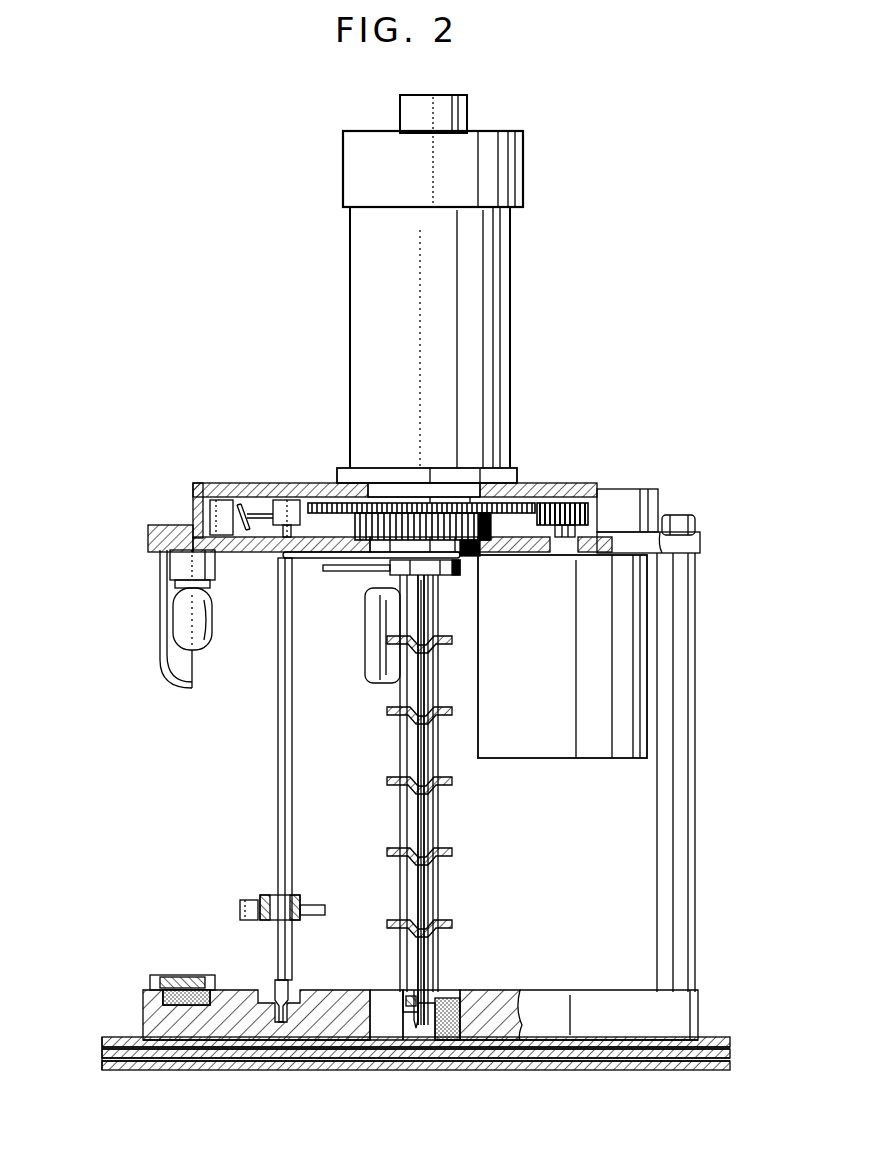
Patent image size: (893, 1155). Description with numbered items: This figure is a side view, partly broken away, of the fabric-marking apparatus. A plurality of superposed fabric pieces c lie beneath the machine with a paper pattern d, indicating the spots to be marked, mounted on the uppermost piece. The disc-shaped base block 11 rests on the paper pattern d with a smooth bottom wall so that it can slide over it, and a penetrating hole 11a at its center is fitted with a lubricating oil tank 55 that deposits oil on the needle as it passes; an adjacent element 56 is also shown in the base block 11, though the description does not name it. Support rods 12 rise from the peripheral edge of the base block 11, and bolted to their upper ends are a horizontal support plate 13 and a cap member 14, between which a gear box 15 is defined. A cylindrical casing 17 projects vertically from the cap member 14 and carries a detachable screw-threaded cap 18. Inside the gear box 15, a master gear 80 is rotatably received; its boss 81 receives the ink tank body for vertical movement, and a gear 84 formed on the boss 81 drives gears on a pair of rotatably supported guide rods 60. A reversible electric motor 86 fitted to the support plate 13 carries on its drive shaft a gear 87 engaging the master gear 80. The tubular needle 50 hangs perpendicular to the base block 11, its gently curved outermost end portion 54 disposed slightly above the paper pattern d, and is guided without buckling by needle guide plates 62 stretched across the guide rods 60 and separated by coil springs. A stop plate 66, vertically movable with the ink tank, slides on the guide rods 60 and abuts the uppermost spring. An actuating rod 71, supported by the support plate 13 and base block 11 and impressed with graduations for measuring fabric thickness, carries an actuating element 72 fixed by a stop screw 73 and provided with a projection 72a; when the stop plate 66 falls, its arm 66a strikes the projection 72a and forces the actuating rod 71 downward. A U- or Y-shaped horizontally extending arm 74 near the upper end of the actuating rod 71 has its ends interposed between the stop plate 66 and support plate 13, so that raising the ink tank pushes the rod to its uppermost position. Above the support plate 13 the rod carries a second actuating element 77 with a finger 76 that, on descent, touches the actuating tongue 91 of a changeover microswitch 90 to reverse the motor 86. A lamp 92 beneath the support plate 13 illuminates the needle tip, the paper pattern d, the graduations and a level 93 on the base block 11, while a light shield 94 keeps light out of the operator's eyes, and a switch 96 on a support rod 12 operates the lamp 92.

The base block 11 is at (698, 1025).
The penetrating hole 11a is at (372, 1040).
The support rods 12 is at (400, 740).
The support plate 13 is at (590, 553).
The cap member 14 is at (640, 489).
The gear box 15 is at (597, 495).
The cylindrical casing 17 is at (510, 318).
The cap 18 is at (523, 178).
The tubular needle 50 is at (430, 885).
The outermost end portion 54 is at (418, 1030).
The lubricating oil tank 55 is at (440, 995).
The anvil pad 56 is at (450, 1040).
The guide rods 60 is at (438, 808).
The needle guide plates 62 is at (452, 851).
The stop plate 66 is at (452, 575).
The arm 66a is at (350, 572).
The actuating rod 71 is at (278, 755).
The actuating element 72 is at (297, 898).
The projection 72a is at (318, 915).
The stop screw 73 is at (248, 900).
The horizontally extending arm 74 is at (310, 560).
The finger 76 is at (258, 510).
The second actuating element 77 is at (288, 500).
The master gear 80 is at (520, 503).
The boss 81 is at (455, 500).
The gear 84 is at (492, 527).
The reversible electric motor 86 is at (570, 758).
The gear 87 is at (563, 503).
The changeover microswitch 90 is at (210, 510).
The actuating tongue 91 is at (235, 548).
The lamp 92 is at (212, 622).
The level 93 is at (172, 975).
The light shield 94 is at (178, 690).
The switch 96 is at (365, 662).
The fabric pieces c is at (102, 1050).
The paper pattern d is at (115, 1037).